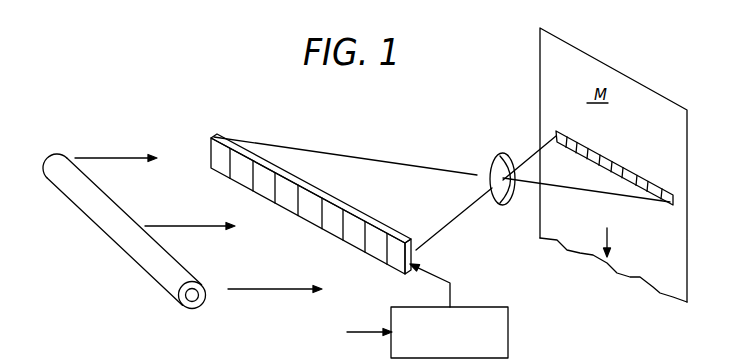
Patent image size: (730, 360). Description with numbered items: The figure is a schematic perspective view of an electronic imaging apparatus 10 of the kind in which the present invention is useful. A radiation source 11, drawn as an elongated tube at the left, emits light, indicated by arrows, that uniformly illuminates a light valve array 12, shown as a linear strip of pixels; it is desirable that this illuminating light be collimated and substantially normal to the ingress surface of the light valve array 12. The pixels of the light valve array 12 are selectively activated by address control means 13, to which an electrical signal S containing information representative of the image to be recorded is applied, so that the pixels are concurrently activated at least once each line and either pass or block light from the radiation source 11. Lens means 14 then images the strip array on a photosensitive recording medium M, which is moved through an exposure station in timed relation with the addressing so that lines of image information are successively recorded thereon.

The electronic imaging apparatus 10 is at (325, 112).
The radiation source 11 is at (200, 304).
The light valve array 12 is at (377, 221).
The address control means 13 is at (510, 338).
The lens means 14 is at (502, 197).